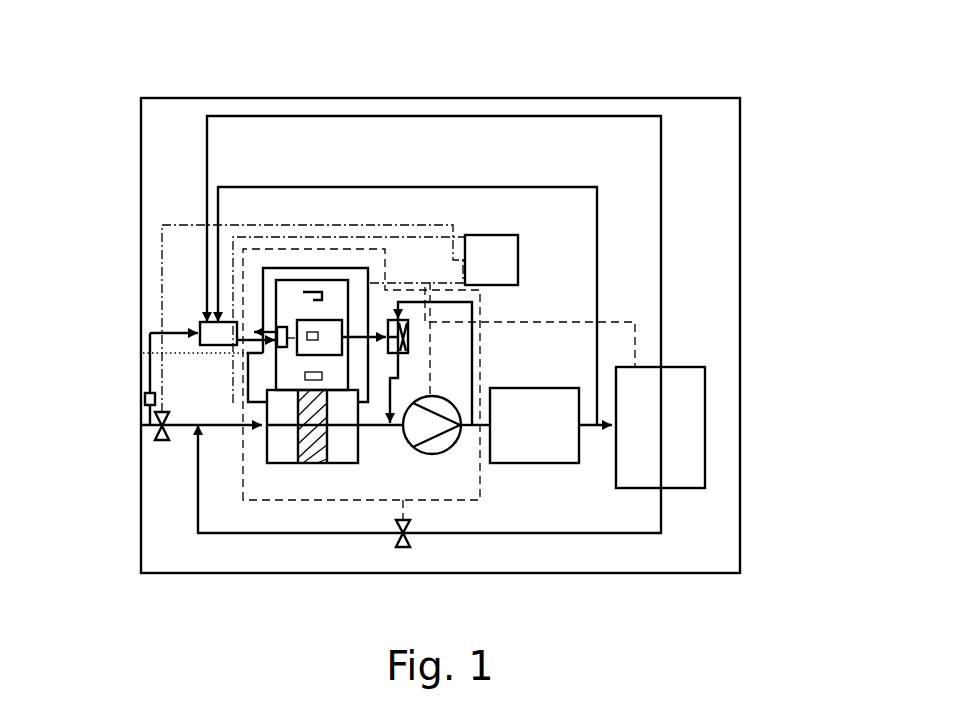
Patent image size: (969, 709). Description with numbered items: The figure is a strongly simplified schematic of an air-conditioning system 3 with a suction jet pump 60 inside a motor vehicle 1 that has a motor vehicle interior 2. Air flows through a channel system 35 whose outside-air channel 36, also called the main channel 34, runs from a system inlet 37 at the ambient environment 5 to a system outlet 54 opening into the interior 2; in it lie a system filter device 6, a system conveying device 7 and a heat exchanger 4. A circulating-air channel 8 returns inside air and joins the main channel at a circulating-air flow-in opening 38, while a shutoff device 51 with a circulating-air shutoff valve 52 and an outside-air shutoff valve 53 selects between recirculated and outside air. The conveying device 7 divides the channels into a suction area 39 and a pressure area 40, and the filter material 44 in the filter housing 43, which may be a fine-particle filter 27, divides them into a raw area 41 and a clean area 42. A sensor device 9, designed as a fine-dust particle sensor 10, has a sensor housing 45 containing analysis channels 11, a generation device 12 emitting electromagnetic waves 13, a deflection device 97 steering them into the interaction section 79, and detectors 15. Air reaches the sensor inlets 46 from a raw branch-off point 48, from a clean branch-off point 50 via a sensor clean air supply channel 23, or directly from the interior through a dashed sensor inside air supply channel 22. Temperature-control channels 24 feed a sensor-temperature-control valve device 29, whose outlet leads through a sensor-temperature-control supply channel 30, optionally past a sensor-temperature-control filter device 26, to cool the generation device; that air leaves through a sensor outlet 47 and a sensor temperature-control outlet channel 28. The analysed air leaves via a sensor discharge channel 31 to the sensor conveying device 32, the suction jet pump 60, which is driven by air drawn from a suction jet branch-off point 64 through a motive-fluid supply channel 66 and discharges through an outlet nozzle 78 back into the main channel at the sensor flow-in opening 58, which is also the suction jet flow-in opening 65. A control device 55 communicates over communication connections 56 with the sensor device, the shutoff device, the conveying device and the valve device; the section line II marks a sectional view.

The motor vehicle 1 is at (166, 93).
The motor vehicle interior 2 is at (653, 441).
The air-conditioning system 3 is at (672, 131).
The heat exchanger 4 is at (528, 441).
The ambient environment 5 is at (78, 255).
The system filter device 6 is at (340, 534).
The system conveying device 7 is at (458, 500).
The circulating-air channel 8 is at (557, 535).
The sensor device 9 is at (407, 281).
The fine-dust particle sensor 10 is at (321, 263).
The analysis channel 11 is at (328, 308).
The generation device 12 is at (288, 302).
The electromagnetic waves 13 is at (305, 355).
The detector 15 is at (304, 290).
The sensor inside air supply channel 22 is at (615, 320).
The sensor clean air supply channel 23 is at (342, 320).
The temperature-control channel 24 is at (556, 186).
The sensor-temperature-control filter device 26 is at (150, 440).
The fine-particle filter 27 is at (285, 475).
The sensor temperature-control outlet channel 28 is at (210, 320).
The sensor-temperature-control valve device 29 is at (199, 321).
The sensor-temperature-control supply channel 30 is at (167, 379).
The sensor discharge channel 31 is at (352, 344).
The sensor conveying device 32 is at (492, 312).
The main channel 34 is at (167, 478).
The channel system 35 is at (168, 532).
The outside-air channel 36 is at (183, 427).
The system inlet 37 is at (155, 433).
The circulating-air flow-in opening 38 is at (200, 433).
The suction area 39 is at (283, 557).
The pressure area 40 is at (477, 507).
The raw area 41 is at (200, 557).
The clean area 42 is at (430, 507).
The filter housing 43 is at (330, 466).
The filter material 44 is at (298, 447).
The sensor housing 45 is at (288, 274).
The sensor inlet 46 is at (268, 332).
The sensor outlet 47 is at (345, 332).
The raw branch-off point 48 is at (150, 352).
The clean branch-off point 50 is at (333, 392).
The shutoff device 51 is at (408, 557).
The circulating-air shutoff valve 52 is at (398, 548).
The outside-air shutoff valve 53 is at (160, 441).
The system outlet 54 is at (613, 427).
The control device 55 is at (503, 272).
The communication connections 56 is at (460, 260).
The sensor flow-in opening 58 is at (413, 450).
The suction jet pump 60 is at (414, 337).
The suction jet branch-off point 64 is at (472, 428).
The suction jet flow-in opening 65 is at (396, 428).
The motive-fluid supply channel 66 is at (481, 363).
The outlet nozzle 78 is at (330, 372).
The interaction section 79 is at (328, 392).
The deflection device 97 is at (304, 292).
The section II is at (255, 500).